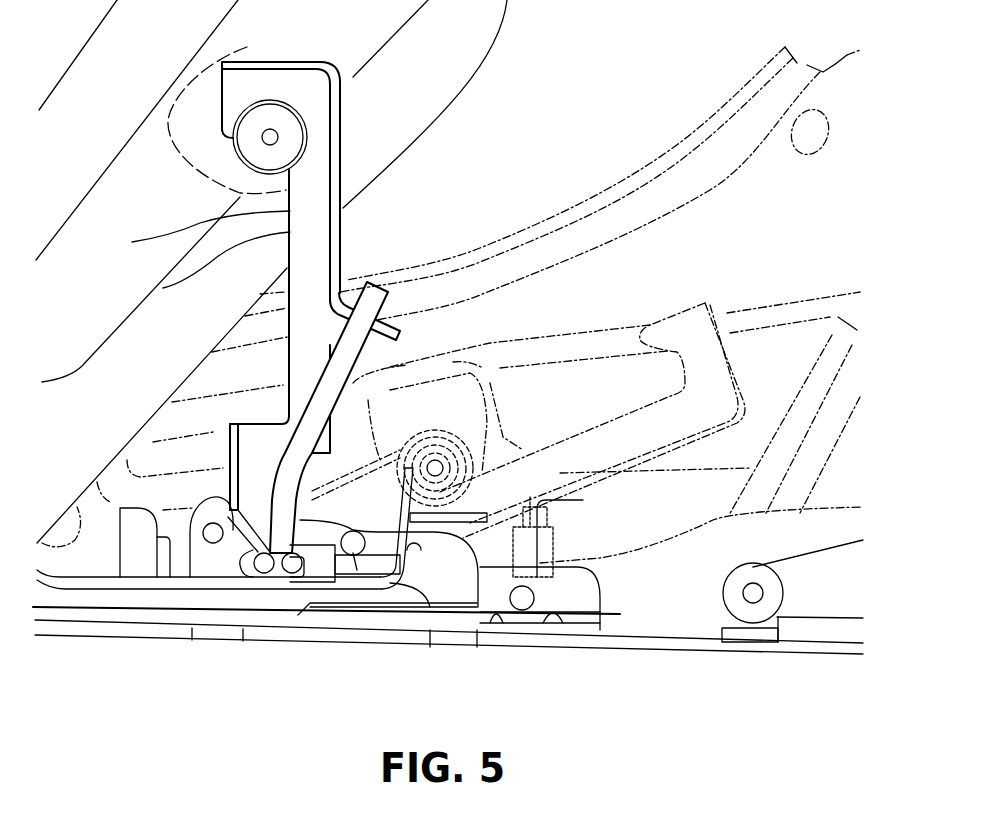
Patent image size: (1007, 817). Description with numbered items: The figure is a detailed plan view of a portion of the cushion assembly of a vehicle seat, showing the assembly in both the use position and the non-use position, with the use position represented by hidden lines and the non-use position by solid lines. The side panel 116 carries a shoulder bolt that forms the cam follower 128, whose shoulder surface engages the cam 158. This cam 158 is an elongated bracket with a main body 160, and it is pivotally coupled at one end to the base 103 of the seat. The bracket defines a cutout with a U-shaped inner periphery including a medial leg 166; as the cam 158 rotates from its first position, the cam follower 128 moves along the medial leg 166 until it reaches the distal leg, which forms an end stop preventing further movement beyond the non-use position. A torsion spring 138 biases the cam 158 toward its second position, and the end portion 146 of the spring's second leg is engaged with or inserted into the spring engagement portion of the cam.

The base 103 is at (190, 594).
The side panel 116 is at (750, 240).
The cam follower 128 is at (253, 123).
The torsion spring 138 is at (375, 386).
The end portion of second leg 146 is at (383, 280).
The cam, elongated bracket 158 is at (224, 286).
The main body of cam 160 is at (831, 477).
The medial leg 166 is at (163, 288).